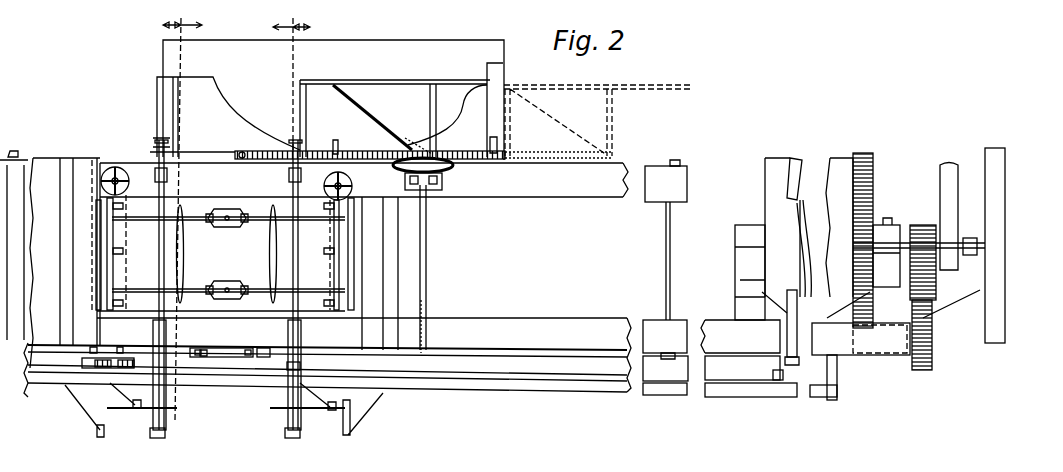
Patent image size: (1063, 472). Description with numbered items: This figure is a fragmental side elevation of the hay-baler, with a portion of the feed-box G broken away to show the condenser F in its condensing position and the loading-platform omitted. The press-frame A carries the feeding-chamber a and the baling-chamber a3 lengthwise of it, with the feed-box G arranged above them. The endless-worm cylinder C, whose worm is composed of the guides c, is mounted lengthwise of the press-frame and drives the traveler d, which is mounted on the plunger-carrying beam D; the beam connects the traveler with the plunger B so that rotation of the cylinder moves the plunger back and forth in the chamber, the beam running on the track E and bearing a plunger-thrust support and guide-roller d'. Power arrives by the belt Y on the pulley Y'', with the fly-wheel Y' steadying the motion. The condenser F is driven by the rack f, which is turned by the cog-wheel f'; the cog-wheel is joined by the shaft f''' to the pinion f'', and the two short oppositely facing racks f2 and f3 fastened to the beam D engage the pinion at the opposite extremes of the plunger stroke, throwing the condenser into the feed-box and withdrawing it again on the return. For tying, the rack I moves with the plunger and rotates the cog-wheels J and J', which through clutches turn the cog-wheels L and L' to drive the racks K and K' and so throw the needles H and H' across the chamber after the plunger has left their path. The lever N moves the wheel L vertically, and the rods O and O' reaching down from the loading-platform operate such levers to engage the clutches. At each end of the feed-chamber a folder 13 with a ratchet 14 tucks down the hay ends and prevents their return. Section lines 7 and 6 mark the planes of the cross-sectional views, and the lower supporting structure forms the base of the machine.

The section line 7 7 is at (182, 220).
The section line 6 6 is at (299, 220).
The folder 13 is at (117, 162).
The ratchet 14 is at (101, 183).
The feeding-chamber a is at (138, 148).
The baling-chamber a3 is at (450, 228).
The press-frame A is at (520, 198).
The plunger B is at (665, 277).
The endless-worm cylinder C is at (842, 158).
The guides c is at (790, 176).
The plunger-carrying beam D is at (590, 372).
The traveler d is at (761, 272).
The plunger-thrust support and guide-roller d' is at (775, 395).
The track E is at (545, 388).
The condenser F is at (412, 82).
The rack f is at (327, 146).
The cog-wheel f' is at (431, 177).
The pinion f'' is at (439, 338).
The shaft f''' is at (434, 308).
The rack f2 is at (397, 360).
The rack f3 is at (236, 356).
The feed-box G is at (328, 100).
The needle H is at (233, 254).
The needle H' is at (119, 235).
The rack I is at (80, 359).
The cog-wheel J is at (279, 382).
The pinion J' is at (180, 357).
The rack K is at (340, 409).
The needle-rack K' is at (103, 410).
The cog-wheel L is at (254, 410).
The cog-wheel L' is at (189, 399).
The lever N is at (150, 433).
The rod O is at (306, 186).
The rod O' is at (130, 181).
The belt Y is at (906, 286).
The fly-wheel Y' is at (942, 245).
The pulley Y'' is at (940, 217).
The base frame base is at (840, 345).